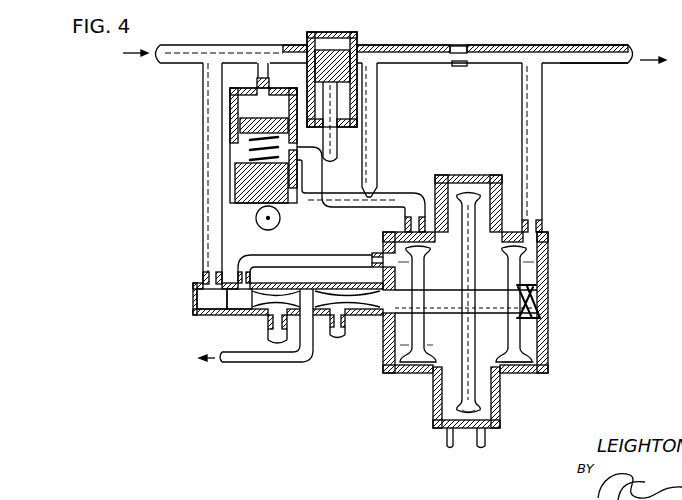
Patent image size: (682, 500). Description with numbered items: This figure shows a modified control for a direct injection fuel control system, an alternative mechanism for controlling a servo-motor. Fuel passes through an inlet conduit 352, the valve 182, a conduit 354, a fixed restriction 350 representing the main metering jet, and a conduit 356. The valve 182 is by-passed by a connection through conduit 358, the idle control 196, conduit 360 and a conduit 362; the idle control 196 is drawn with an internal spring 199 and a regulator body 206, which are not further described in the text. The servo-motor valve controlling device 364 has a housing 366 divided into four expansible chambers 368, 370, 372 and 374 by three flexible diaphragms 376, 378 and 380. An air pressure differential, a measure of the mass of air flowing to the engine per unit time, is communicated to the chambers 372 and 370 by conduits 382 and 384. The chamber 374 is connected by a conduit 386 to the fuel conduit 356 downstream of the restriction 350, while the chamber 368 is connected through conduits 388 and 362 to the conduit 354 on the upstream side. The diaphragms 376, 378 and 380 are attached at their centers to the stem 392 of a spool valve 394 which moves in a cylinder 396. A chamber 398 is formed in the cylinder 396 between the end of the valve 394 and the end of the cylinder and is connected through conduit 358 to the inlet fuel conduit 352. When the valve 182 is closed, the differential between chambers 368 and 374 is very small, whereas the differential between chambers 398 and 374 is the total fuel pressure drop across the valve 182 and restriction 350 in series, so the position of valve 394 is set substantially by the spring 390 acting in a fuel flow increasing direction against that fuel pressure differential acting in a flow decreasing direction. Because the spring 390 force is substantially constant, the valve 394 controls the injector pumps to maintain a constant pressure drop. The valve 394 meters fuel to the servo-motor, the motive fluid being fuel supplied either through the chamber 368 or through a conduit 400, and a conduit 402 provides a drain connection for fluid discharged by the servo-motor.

The valve 182 is at (356, 33).
The idle control 196 is at (236, 172).
The spring 199 is at (235, 162).
The pressure regulator 206 is at (262, 100).
The fixed restriction 350 is at (460, 47).
The inlet conduit 352 is at (205, 52).
The conduit 354 is at (417, 48).
The conduit 356 is at (532, 47).
The conduit 358 is at (207, 99).
The conduit 360 is at (350, 208).
The conduit 362 is at (377, 112).
The servo-motor valve controlling device 364 is at (594, 255).
The housing 366 is at (461, 177).
The expansible chamber 368 is at (395, 344).
The expansible chamber 370 is at (442, 350).
The expansible chamber 372 is at (488, 353).
The expansible chamber 374 is at (532, 348).
The flexible diaphragm 376 is at (404, 344).
The flexible diaphragm 378 is at (462, 415).
The flexible diaphragm 380 is at (549, 368).
The conduit 382 is at (488, 444).
The conduit 384 is at (445, 438).
The conduit 386 is at (541, 126).
The conduit 388 is at (416, 200).
The spring 390 is at (543, 289).
The stem 392 is at (451, 299).
The spool valve 394 is at (232, 305).
The cylinder 396 is at (193, 299).
The chamber 398 is at (193, 288).
The conduit 400 is at (296, 258).
The conduit 402 is at (248, 362).